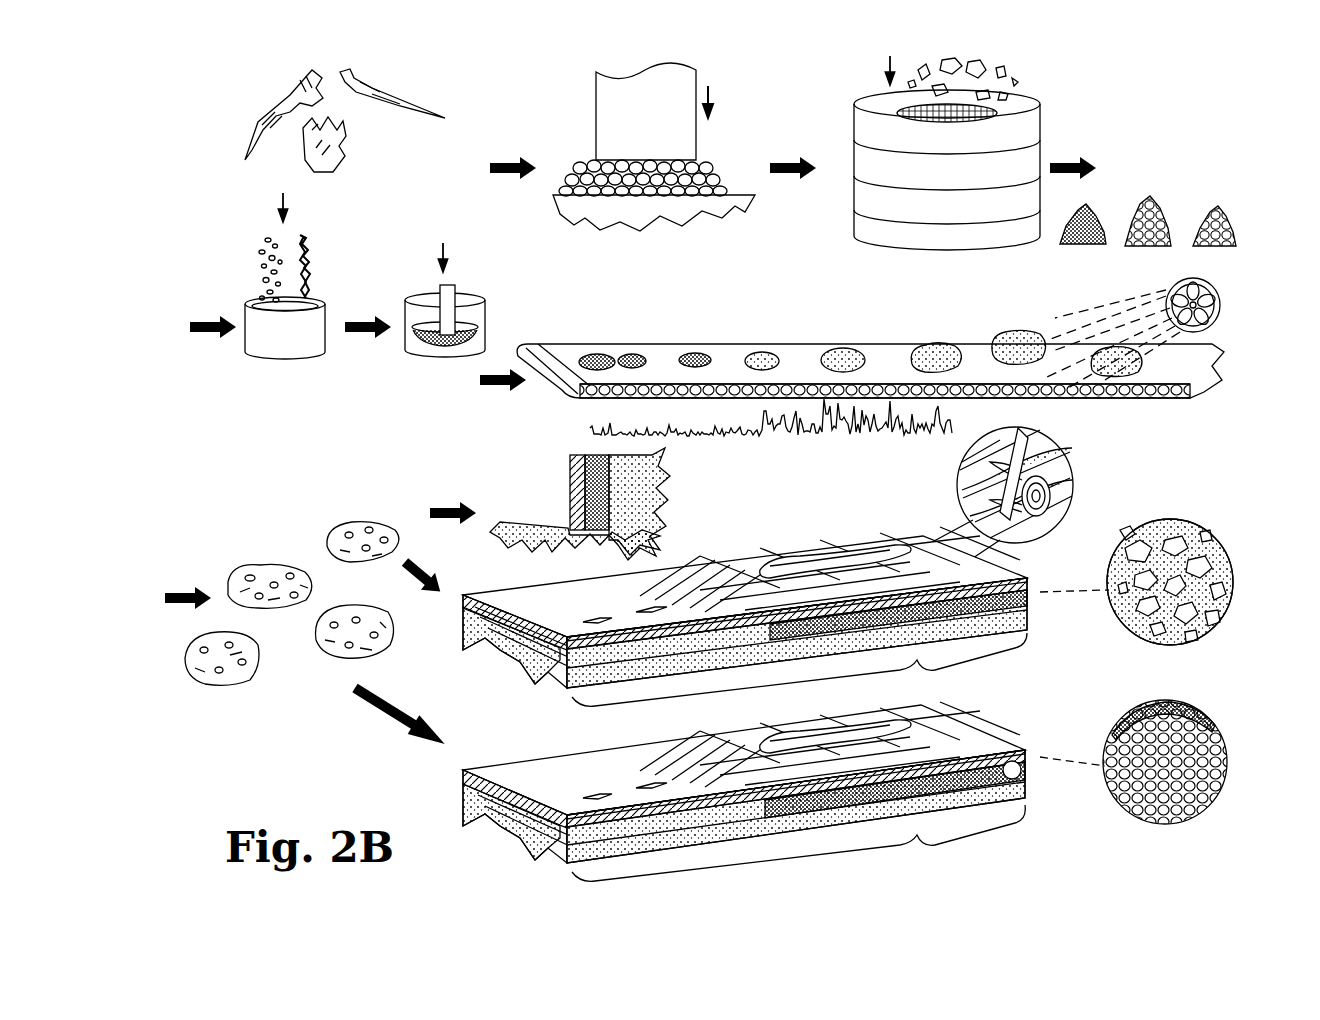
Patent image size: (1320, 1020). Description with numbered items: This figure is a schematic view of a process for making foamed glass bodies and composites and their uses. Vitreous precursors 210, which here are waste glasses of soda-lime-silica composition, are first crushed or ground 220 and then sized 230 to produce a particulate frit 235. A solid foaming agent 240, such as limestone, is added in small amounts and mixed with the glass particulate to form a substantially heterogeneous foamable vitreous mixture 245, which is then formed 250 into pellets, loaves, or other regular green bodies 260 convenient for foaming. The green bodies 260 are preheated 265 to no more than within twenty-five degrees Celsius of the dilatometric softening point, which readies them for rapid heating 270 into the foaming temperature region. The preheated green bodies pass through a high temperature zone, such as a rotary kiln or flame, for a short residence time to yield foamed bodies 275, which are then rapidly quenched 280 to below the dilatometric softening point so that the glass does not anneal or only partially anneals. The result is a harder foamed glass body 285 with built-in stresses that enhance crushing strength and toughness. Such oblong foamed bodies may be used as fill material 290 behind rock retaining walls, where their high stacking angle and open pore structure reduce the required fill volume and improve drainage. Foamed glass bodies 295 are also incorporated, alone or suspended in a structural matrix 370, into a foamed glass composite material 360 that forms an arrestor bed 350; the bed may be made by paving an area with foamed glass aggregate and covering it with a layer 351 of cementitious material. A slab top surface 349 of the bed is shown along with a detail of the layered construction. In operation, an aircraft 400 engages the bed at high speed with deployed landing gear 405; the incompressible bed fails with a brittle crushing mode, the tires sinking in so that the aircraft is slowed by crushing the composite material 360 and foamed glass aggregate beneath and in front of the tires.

The vitreous precursors 210 is at (235, 100).
The crushing or grinding step 220 is at (562, 102).
The sizing step 230 is at (835, 104).
The particulate frit 235 is at (1188, 184).
The solid foaming agent 240 is at (248, 248).
The foamable vitreous mixture 245 is at (254, 380).
The pelletizing step 250 is at (403, 370).
The green bodies 260 is at (596, 354).
The preheating step 265 is at (578, 408).
The rapid heating step 270 is at (830, 450).
The foamed bodies 275 is at (934, 346).
The quenching step 280 is at (1100, 290).
The foamed glass body 285 is at (232, 680).
The fill material 290 is at (648, 462).
The foamed glass bodies 295 is at (1202, 540).
The slab top surface 349 is at (527, 600).
The arrestor bed 350 is at (797, 729).
The layer of cementitious material 351 is at (1033, 578).
The foamed glass composite material 360 is at (1036, 592).
The structural matrix 370 is at (1228, 604).
The aircraft 400 is at (868, 556).
The landing gear 405 is at (992, 452).